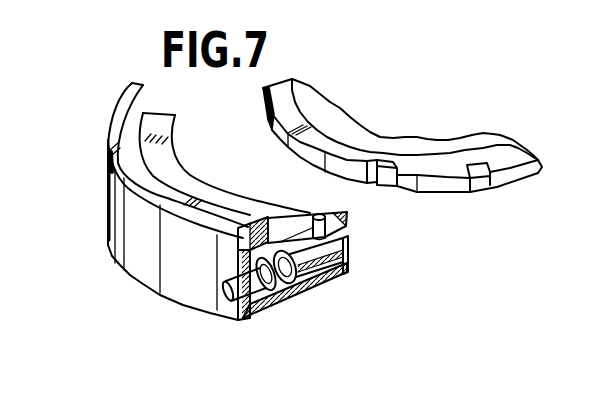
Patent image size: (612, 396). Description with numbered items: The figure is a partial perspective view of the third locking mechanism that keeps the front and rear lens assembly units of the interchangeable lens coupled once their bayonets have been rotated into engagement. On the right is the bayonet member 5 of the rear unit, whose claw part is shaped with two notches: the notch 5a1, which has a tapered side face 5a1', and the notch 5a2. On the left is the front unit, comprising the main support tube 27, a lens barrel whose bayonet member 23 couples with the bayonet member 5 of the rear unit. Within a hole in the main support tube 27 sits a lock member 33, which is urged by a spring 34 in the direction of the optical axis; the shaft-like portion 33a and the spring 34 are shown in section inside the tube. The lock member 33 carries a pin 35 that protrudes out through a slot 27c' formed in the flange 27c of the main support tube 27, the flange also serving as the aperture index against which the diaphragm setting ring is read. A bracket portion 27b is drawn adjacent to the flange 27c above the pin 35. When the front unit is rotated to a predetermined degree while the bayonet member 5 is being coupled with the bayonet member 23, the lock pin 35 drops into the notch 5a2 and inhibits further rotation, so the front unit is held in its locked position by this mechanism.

The bayonet member 5 is at (373, 140).
The notch 5a1 is at (371, 192).
The tapered side face 5a1' is at (404, 197).
The notch 5a2 is at (483, 181).
The bayonet member 23 is at (135, 131).
The main support tube 27 is at (147, 258).
The bracket portion 27b is at (343, 237).
The flange 27c is at (258, 242).
The slot 27c' is at (306, 277).
The lock member 33 is at (312, 272).
The shaft 33a is at (227, 303).
The spring 34 is at (272, 300).
The pin 35 is at (316, 226).